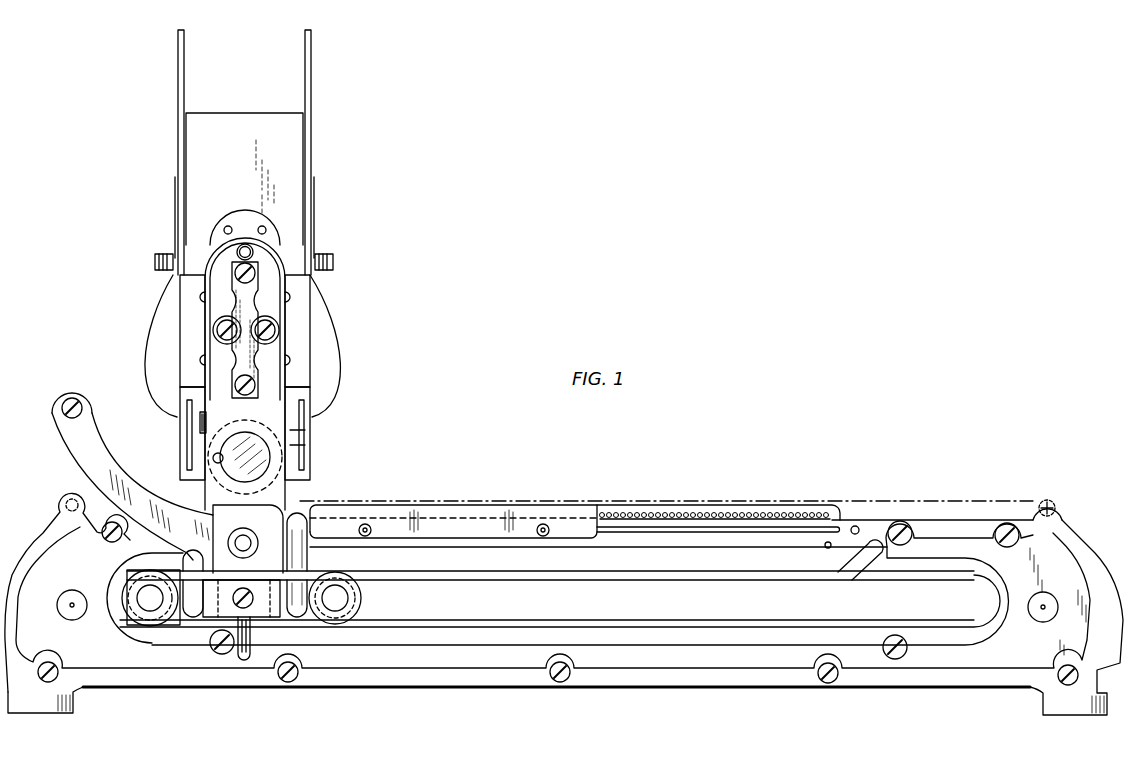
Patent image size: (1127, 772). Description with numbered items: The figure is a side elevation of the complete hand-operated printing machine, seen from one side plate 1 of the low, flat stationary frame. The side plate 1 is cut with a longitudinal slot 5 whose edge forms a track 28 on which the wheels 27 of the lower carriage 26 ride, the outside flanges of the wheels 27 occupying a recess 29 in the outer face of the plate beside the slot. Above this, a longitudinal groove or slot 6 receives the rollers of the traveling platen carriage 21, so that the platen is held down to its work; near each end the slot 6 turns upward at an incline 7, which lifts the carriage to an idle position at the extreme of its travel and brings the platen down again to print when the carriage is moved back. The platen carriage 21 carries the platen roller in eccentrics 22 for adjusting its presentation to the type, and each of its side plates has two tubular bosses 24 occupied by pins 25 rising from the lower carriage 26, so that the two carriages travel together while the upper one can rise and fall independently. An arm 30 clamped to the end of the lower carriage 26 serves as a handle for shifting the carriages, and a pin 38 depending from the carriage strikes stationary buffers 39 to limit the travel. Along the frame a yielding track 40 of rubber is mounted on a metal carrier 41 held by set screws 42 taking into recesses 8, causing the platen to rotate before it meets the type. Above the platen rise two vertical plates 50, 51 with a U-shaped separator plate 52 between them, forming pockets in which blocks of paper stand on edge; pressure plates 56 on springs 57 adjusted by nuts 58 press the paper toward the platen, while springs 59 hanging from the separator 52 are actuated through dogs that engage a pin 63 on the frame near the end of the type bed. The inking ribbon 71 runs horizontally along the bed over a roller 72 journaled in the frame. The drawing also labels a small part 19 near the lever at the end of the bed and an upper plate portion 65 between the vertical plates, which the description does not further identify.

The side plate 1 is at (564, 604).
The longitudinal slot 5 is at (560, 601).
The longitudinal groove or slot 6 is at (598, 549).
The incline 7 is at (860, 557).
The recess 8 is at (693, 528).
The pin 19 is at (828, 548).
The traveling carriage 21 is at (245, 374).
The eccentric 22 is at (245, 457).
The tubular boss 24 is at (298, 520).
The pin 25 is at (308, 570).
The lower carriage 26 is at (241, 597).
The wheel 27 is at (363, 596).
The track 28 is at (760, 622).
The recess 29 is at (843, 626).
The arm 30 is at (102, 473).
The pin 38 is at (252, 651).
The stationary buffer 39 is at (212, 648).
The yielding track 40 is at (592, 507).
The metal carrier 41 is at (453, 522).
The set screw 42 is at (547, 525).
The vertical plate 50 is at (178, 170).
The vertical plate 51 is at (311, 100).
The U-shaped plate 52 is at (208, 253).
The pressure plate 56 is at (312, 442).
The spring 57 is at (340, 363).
The nut 58 is at (330, 278).
The spring 59 is at (206, 420).
The pin 63 is at (858, 528).
The plate 65 is at (244, 179).
The inking ribbon 71 is at (965, 503).
The roller 72 is at (1058, 510).